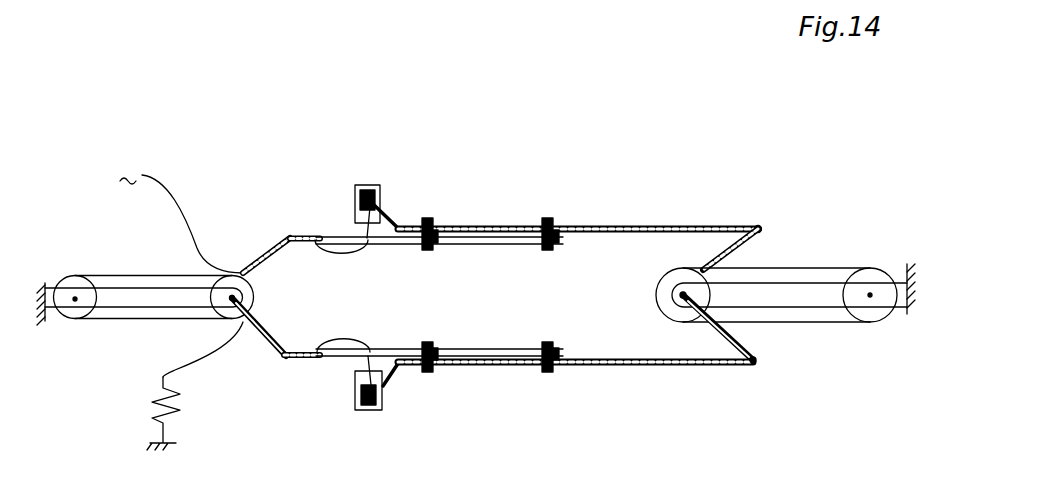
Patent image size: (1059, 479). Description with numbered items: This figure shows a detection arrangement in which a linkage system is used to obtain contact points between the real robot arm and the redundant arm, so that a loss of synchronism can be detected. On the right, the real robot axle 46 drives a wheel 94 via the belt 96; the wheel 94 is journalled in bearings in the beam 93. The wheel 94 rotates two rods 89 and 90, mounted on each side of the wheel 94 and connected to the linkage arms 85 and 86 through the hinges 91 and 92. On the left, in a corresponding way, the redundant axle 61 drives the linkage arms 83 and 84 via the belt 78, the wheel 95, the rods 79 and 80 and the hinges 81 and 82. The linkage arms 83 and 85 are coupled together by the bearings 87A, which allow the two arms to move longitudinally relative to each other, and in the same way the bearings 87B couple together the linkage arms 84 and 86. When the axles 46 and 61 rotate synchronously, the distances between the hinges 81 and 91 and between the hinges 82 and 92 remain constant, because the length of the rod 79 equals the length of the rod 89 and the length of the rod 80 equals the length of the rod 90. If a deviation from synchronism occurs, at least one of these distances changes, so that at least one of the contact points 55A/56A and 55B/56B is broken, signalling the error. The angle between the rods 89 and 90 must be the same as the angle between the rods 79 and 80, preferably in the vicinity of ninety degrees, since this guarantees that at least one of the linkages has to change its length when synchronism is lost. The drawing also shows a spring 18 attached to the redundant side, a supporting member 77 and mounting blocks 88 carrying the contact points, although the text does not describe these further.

The spring 18 is at (183, 403).
The real robot axle 46 is at (873, 268).
The contact point 55A is at (367, 239).
The contact point 55B is at (369, 350).
The contact point 56A is at (380, 210).
The contact point 56B is at (383, 384).
The redundant axle 61 is at (72, 280).
The arm 77 is at (127, 300).
The belt 78 is at (155, 276).
The rod 79 is at (270, 258).
The rod 80 is at (272, 333).
The hinge 81 is at (282, 237).
The hinge 82 is at (284, 360).
The linkage arm 83 is at (471, 258).
The linkage arm 84 is at (490, 349).
The linkage arm 85 is at (577, 224).
The linkage arm 86 is at (617, 366).
The bearings 87A is at (428, 219).
The bearings 87B is at (430, 371).
The bracket 88 is at (368, 190).
The rod 89 is at (750, 234).
The rod 90 is at (743, 335).
The hinge 91 is at (762, 228).
The hinge 92 is at (758, 360).
The beam 93 is at (813, 283).
The wheel 94 is at (677, 272).
The wheel 95 is at (254, 292).
The belt 96 is at (793, 268).